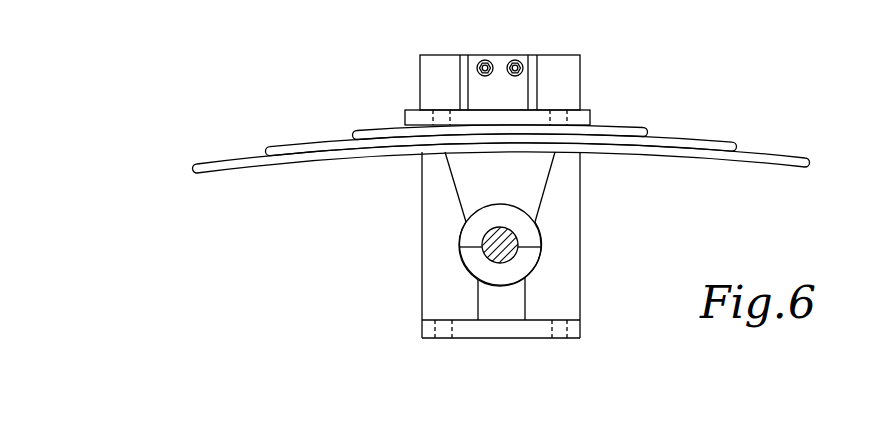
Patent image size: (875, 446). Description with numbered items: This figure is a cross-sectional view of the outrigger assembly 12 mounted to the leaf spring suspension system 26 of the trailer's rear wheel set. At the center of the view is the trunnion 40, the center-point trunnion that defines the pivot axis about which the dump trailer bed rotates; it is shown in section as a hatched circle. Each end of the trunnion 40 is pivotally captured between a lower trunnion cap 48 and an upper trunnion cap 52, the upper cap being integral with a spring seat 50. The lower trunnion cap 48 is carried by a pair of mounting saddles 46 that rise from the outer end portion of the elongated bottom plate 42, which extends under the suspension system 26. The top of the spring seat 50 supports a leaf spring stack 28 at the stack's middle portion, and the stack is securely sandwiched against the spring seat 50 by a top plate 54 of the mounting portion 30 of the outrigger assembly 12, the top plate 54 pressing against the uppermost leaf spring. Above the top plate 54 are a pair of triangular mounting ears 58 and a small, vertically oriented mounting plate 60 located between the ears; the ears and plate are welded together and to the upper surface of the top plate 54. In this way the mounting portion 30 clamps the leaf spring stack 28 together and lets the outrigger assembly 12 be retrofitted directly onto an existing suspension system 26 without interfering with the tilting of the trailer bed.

The outrigger assembly 12 is at (397, 53).
The suspension system 26 is at (615, 105).
The leaf spring stack 28 is at (703, 142).
The mounting portion 30 is at (585, 277).
The trunnion 40 is at (515, 240).
The bottom plate 42 is at (578, 327).
The mounting saddle 46 is at (487, 300).
The lower trunnion cap 48 is at (478, 273).
The spring seat 50 is at (467, 180).
The upper trunnion cap 52 is at (480, 222).
The top plate 54 is at (458, 112).
The mounting ear 58 is at (538, 80).
The mounting plate 60 is at (498, 77).